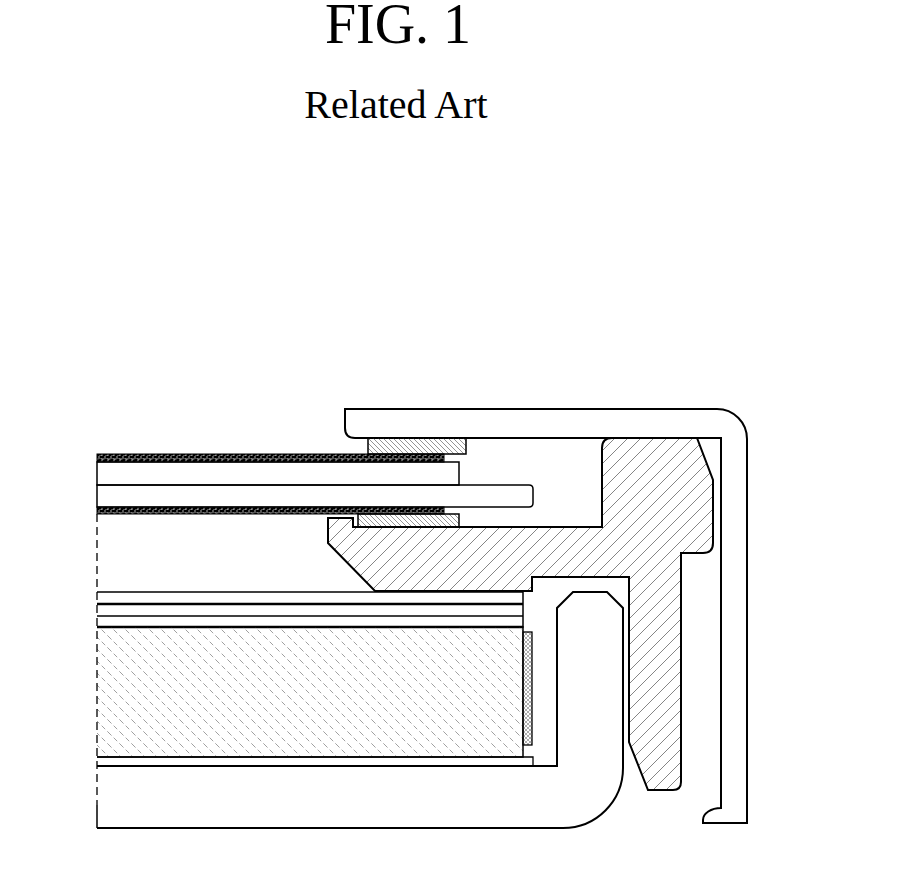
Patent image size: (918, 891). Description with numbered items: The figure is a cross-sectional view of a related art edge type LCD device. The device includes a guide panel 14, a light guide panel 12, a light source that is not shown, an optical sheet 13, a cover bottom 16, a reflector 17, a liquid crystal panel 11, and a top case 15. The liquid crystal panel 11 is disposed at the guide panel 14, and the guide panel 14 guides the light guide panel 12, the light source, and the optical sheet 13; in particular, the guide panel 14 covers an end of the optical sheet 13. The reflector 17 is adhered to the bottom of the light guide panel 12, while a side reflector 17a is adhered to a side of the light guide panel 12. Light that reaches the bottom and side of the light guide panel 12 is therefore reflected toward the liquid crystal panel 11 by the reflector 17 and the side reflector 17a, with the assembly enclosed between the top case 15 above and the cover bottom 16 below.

The liquid crystal panel 11 is at (90, 455).
The light guide panel 12 is at (90, 628).
The optical sheet 13 is at (90, 593).
The guide panel 14 is at (665, 758).
The top case 15 is at (554, 425).
The cover bottom 16 is at (303, 803).
The reflector 17 is at (96, 763).
The side reflector 17a is at (533, 718).